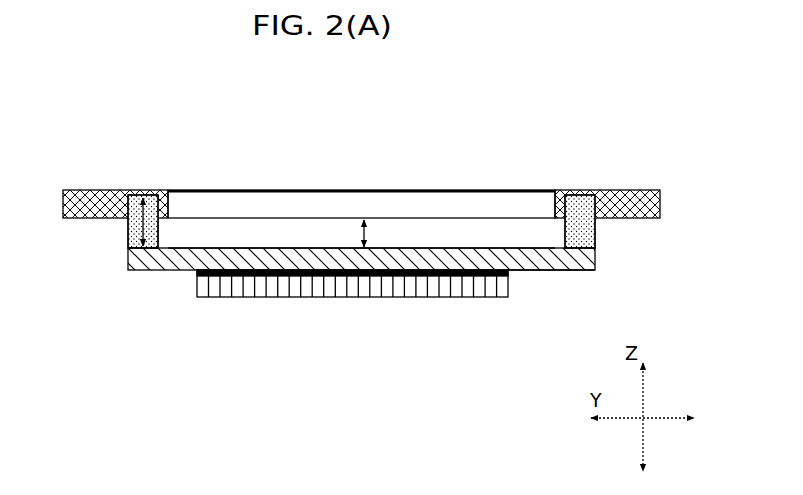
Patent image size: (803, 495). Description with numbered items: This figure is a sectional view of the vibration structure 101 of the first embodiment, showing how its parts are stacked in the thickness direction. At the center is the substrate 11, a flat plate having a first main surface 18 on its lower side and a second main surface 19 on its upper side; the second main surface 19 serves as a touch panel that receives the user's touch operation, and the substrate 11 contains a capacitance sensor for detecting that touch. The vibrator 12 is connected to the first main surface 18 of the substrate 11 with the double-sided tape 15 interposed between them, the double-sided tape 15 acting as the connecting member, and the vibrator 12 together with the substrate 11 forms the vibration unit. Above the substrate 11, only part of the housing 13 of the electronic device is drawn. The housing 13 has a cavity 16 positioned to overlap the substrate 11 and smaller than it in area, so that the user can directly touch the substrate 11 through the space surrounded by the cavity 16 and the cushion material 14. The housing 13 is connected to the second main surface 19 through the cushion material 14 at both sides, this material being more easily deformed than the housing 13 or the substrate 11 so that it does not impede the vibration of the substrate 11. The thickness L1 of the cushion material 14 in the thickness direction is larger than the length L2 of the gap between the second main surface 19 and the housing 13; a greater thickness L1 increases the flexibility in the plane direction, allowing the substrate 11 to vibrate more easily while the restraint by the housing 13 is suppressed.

The vibration structure 101 is at (209, 135).
The substrate 11 is at (575, 271).
The vibrator 12 is at (288, 297).
The housing 13 is at (90, 188).
The cushion material 14 is at (128, 245).
The double-sided tape 15 is at (415, 277).
The cavity 16 is at (497, 202).
The first main surface 18 is at (163, 272).
The second main surface 19 is at (270, 245).
The thickness of the cushion material L1 is at (128, 238).
The length of the gap L2 is at (365, 218).